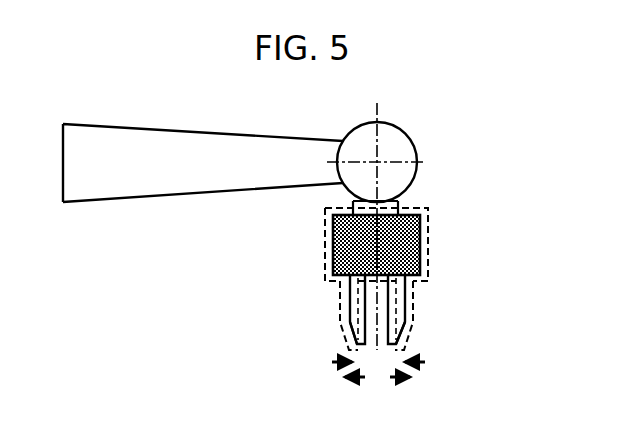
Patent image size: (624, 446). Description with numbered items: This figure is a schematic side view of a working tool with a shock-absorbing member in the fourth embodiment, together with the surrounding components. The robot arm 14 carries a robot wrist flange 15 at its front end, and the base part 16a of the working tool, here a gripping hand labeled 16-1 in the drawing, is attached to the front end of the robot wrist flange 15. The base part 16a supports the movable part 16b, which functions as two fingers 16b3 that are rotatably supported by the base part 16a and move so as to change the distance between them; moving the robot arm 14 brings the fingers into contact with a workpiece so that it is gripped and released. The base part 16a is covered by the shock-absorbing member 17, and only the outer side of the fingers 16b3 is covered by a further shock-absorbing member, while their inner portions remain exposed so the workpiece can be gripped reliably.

The robot arm 14 is at (197, 160).
The robot wrist flange 15 is at (400, 204).
The base part 16a is at (444, 208).
The movable part 16b is at (444, 282).
The engagement member 16-1 is at (514, 232).
The shock-absorbing member 17 is at (325, 233).
The fingers 16b3 is at (350, 306).